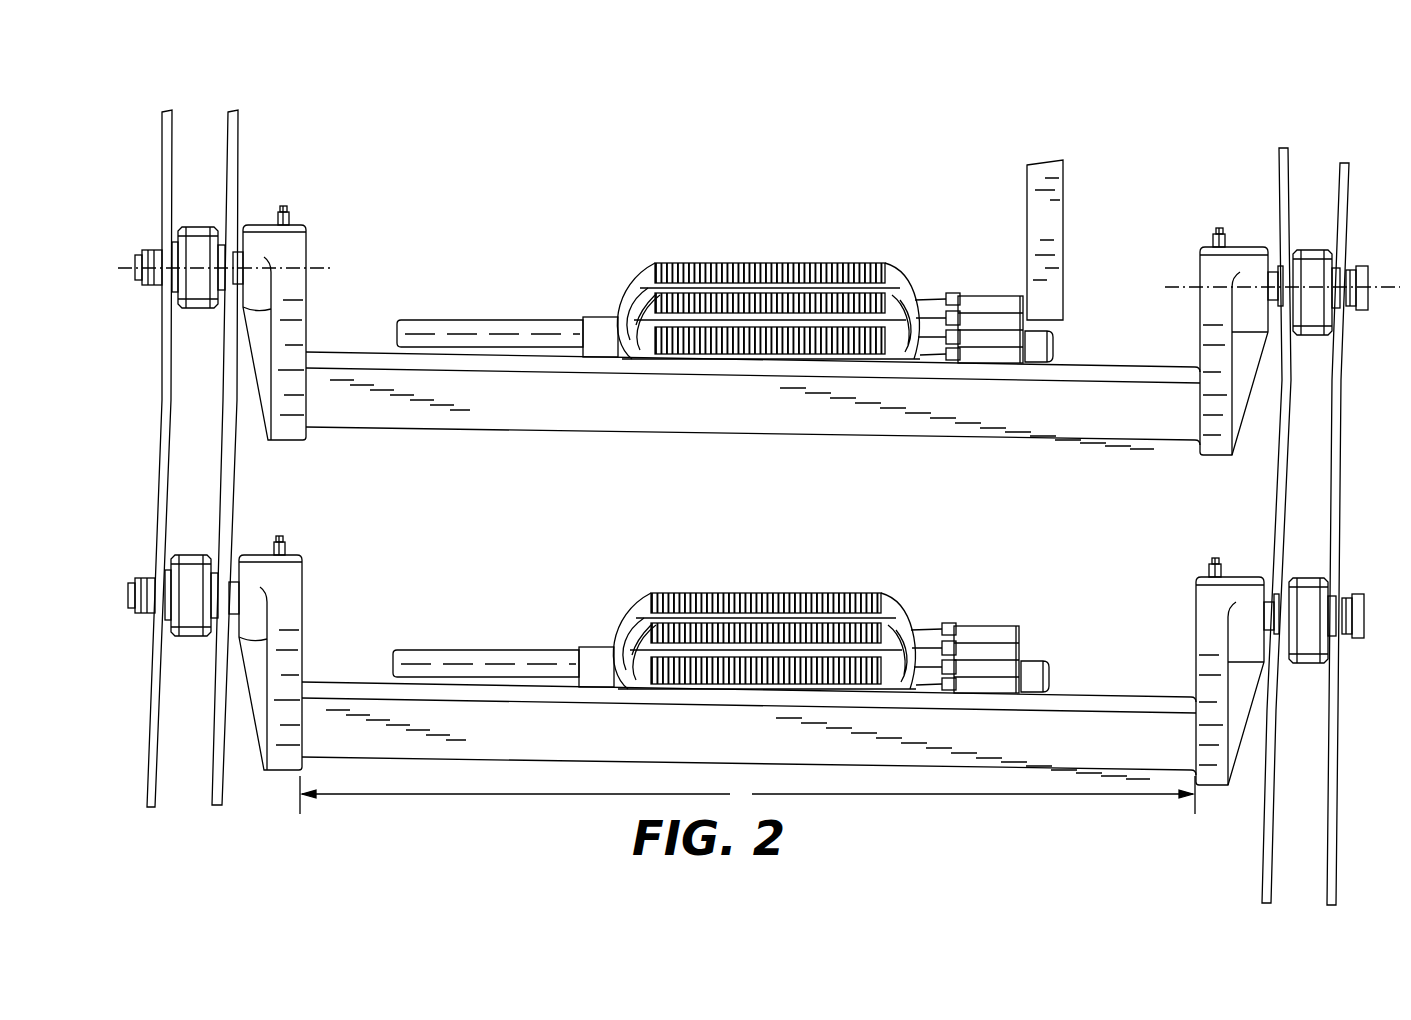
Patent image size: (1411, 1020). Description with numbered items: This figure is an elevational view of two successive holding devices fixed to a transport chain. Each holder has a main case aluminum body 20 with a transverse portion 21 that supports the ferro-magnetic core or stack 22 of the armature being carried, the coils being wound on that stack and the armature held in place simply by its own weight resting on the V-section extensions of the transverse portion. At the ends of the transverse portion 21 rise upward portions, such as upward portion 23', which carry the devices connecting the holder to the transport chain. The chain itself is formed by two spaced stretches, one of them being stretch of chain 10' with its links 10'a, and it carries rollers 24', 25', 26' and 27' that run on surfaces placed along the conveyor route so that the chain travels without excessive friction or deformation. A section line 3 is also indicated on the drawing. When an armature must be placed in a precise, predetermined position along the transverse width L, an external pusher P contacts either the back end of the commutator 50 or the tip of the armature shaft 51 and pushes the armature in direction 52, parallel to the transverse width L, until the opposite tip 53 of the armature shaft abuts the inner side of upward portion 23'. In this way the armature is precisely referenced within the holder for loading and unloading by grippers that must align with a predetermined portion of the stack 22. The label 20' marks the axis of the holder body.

The stretch of chain 10' is at (181, 67).
The links 10'a is at (179, 433).
The main case aluminum body 20 is at (753, 410).
The axis of motorized roller unit 20' is at (800, 341).
The transverse portion 21 is at (906, 430).
The ferro-magnetic core or stack 22 is at (857, 264).
The upward portion 23' is at (292, 308).
The roller 24' is at (177, 287).
The roller 25' is at (1334, 274).
The roller 26' is at (154, 623).
The roller 27' is at (1326, 596).
The back end of the commutator 50 is at (1023, 299).
The tip of the armature shaft 51 is at (1055, 333).
The direction 52 is at (722, 145).
The opposite tip of the armature shaft 53 is at (397, 329).
The section line 3- 3 is at (777, 182).
The external pusher P is at (1064, 234).
The transverse width L is at (747, 795).